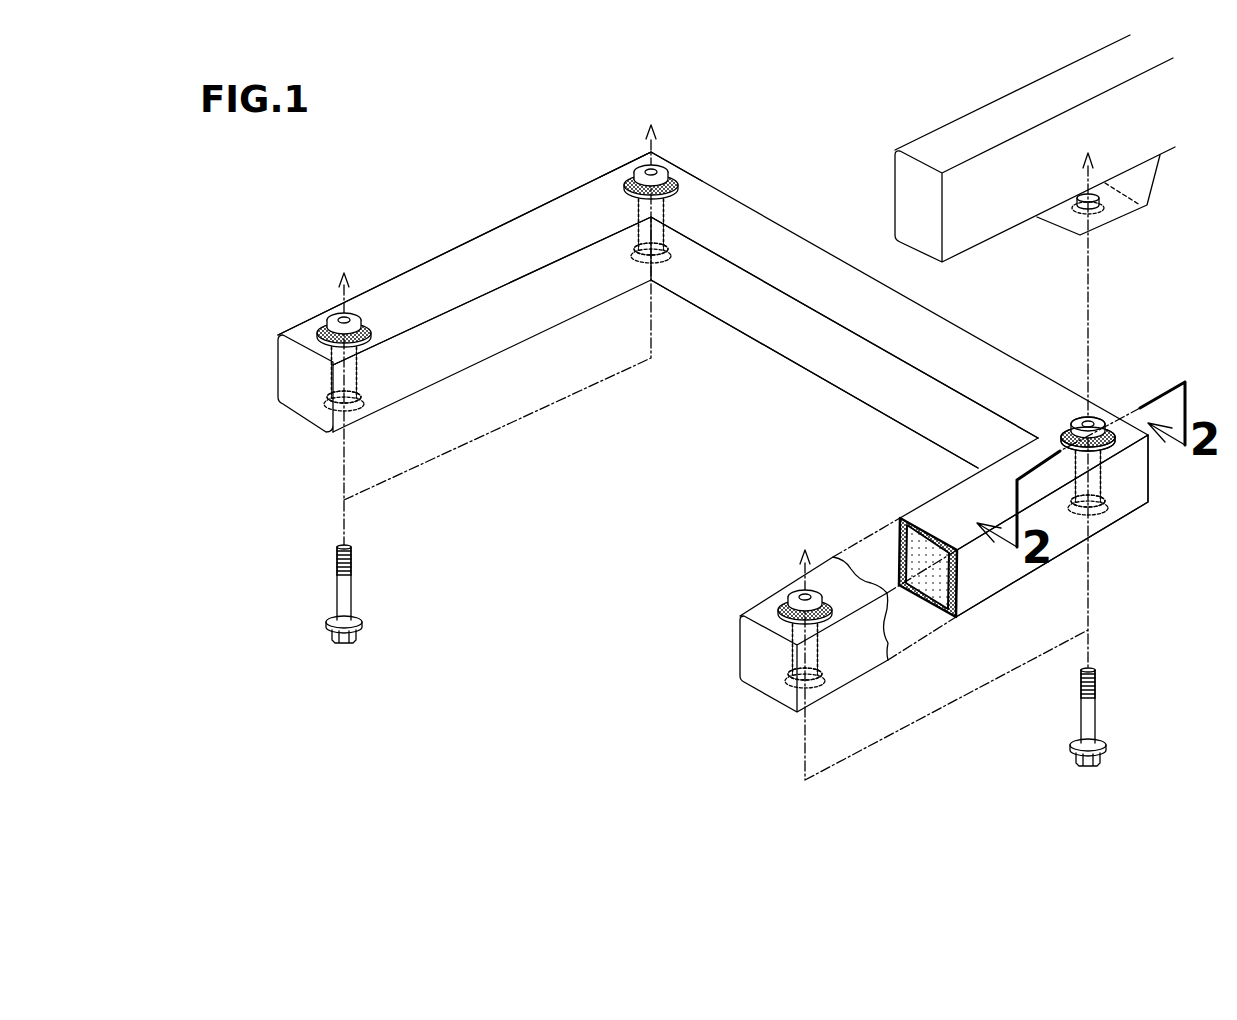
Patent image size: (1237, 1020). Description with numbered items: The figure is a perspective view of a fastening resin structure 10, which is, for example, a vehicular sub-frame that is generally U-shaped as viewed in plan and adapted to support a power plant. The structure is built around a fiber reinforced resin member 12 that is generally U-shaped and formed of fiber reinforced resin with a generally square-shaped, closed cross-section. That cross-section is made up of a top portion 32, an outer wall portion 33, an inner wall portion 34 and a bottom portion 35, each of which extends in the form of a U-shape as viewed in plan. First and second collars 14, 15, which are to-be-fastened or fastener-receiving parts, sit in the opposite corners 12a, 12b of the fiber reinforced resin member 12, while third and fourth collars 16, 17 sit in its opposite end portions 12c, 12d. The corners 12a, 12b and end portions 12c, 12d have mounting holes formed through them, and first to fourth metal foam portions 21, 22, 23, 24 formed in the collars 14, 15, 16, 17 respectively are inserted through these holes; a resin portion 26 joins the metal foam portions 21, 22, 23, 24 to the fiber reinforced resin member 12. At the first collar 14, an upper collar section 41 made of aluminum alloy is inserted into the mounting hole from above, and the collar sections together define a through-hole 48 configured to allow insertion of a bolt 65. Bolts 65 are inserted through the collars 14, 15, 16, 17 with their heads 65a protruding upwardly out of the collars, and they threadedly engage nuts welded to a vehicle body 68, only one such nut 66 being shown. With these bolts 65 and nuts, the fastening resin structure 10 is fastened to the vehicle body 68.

The fastening resin structure 10 is at (470, 192).
The fiber reinforced resin member 12 is at (431, 245).
The corner 12a is at (1120, 445).
The corner 12b is at (623, 175).
The end portion 12c is at (777, 623).
The end portion 12d is at (305, 337).
The first collar 14 is at (1106, 407).
The second collar 15 is at (660, 173).
The third collar 16 is at (795, 590).
The fourth collar 17 is at (333, 318).
The first metal foam portion 21 is at (1103, 487).
The second metal foam portion 22 is at (665, 228).
The third metal foam portion 23 is at (817, 657).
The fourth metal foam portion 24 is at (327, 383).
The resin portion 26 is at (1067, 437).
The top portion 32 is at (563, 213).
The outer wall portion 33 is at (982, 585).
The inner wall portion 34 is at (763, 322).
The bottom portion 35 is at (923, 607).
The upper collar section 41 is at (1080, 415).
The through-hole 48 is at (1072, 445).
The bolt 65 is at (338, 608).
The head 65a is at (353, 563).
The nut 66 is at (1100, 207).
The vehicle body 68 is at (1017, 107).